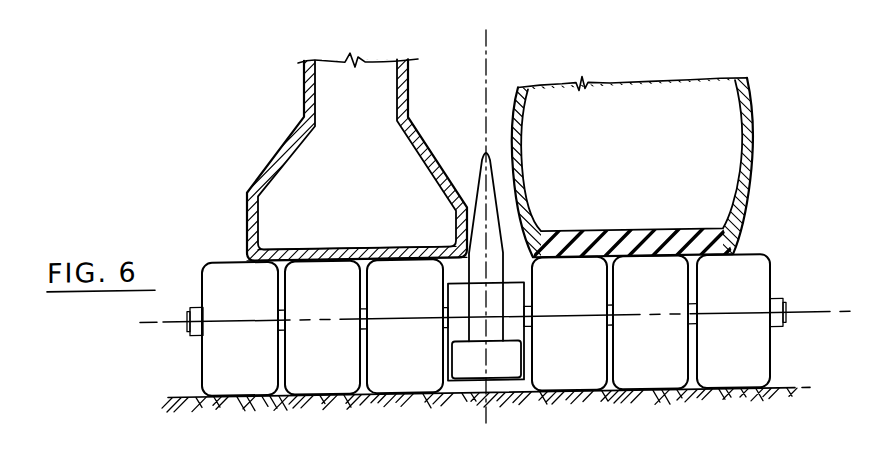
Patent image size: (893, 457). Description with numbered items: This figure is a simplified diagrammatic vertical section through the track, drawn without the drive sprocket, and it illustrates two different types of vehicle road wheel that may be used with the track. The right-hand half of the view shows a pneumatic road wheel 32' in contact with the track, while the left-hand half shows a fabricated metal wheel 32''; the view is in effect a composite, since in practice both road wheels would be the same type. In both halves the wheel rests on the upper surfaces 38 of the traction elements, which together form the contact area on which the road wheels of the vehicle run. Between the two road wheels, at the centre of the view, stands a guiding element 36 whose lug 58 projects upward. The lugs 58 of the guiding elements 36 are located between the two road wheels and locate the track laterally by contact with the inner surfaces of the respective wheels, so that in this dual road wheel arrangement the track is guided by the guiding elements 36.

The pneumatic road wheel 32' is at (609, 167).
The fabricated metal wheel 32'' is at (352, 157).
The guiding elements 36 is at (507, 385).
The upper surfaces 38 is at (396, 246).
The lugs 58 is at (479, 171).